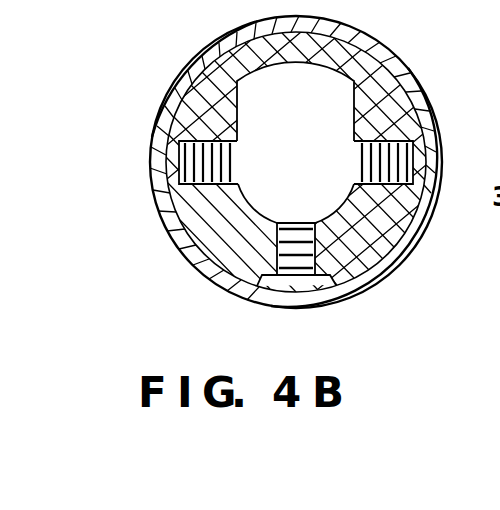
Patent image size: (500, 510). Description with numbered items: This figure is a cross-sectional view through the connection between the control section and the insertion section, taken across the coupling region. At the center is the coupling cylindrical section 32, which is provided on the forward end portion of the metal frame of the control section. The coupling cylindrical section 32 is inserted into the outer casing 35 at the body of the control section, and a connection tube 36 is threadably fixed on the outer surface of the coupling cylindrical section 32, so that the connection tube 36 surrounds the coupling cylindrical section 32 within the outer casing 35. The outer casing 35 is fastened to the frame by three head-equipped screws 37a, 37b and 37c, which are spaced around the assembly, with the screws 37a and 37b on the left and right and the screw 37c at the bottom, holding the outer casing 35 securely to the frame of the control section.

The coupling cylindrical section 32 is at (254, 228).
The outer casing 35 is at (197, 229).
The connection tube 36 is at (408, 75).
The head-equipped screw 37a is at (183, 160).
The head-equipped screw 37b is at (413, 154).
The head-equipped screw 37c is at (289, 278).